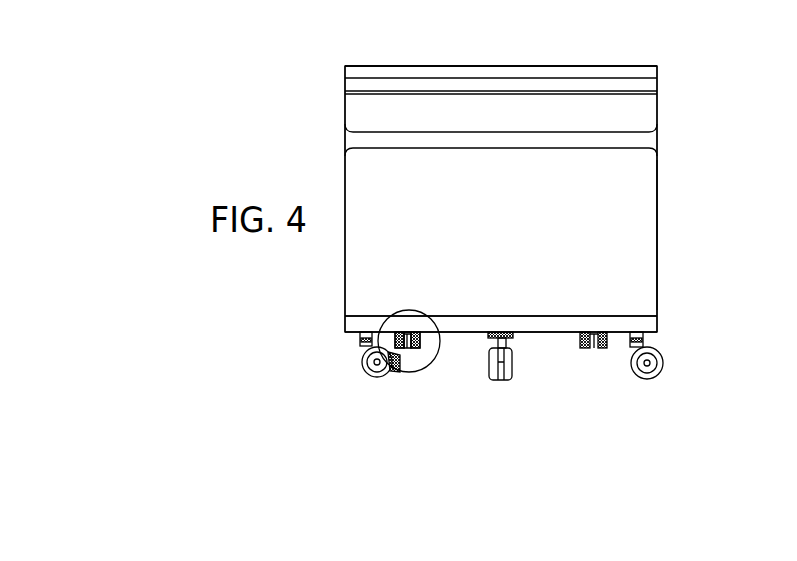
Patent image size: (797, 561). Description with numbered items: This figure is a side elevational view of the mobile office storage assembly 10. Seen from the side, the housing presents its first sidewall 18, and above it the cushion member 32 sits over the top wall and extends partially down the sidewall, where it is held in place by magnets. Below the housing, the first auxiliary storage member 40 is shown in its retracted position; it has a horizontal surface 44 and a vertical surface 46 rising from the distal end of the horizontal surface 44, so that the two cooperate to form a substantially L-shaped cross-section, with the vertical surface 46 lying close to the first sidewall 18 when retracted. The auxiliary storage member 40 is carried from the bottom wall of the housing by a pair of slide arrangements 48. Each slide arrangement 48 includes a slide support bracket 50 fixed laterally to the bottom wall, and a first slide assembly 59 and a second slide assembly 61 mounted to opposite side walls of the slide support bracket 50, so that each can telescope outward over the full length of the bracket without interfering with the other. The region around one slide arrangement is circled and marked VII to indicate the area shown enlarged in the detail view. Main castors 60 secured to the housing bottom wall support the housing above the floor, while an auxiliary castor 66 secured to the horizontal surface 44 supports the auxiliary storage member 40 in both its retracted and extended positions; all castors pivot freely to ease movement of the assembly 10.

The mobile office storage assembly 10 is at (674, 58).
The first sidewall 18 is at (642, 140).
The cushion member 32 is at (480, 66).
The first auxiliary storage member 40 is at (660, 188).
The horizontal surface 44 is at (456, 333).
The vertical surface 46 is at (638, 255).
The slide arrangement 48 is at (410, 350).
The slide support bracket 50 is at (418, 352).
The first slide assembly 59 is at (398, 332).
The main castor 60 is at (362, 369).
The second slide assembly 61 is at (418, 332).
The auxiliary castor 66 is at (490, 378).
The detail view VII is at (378, 328).